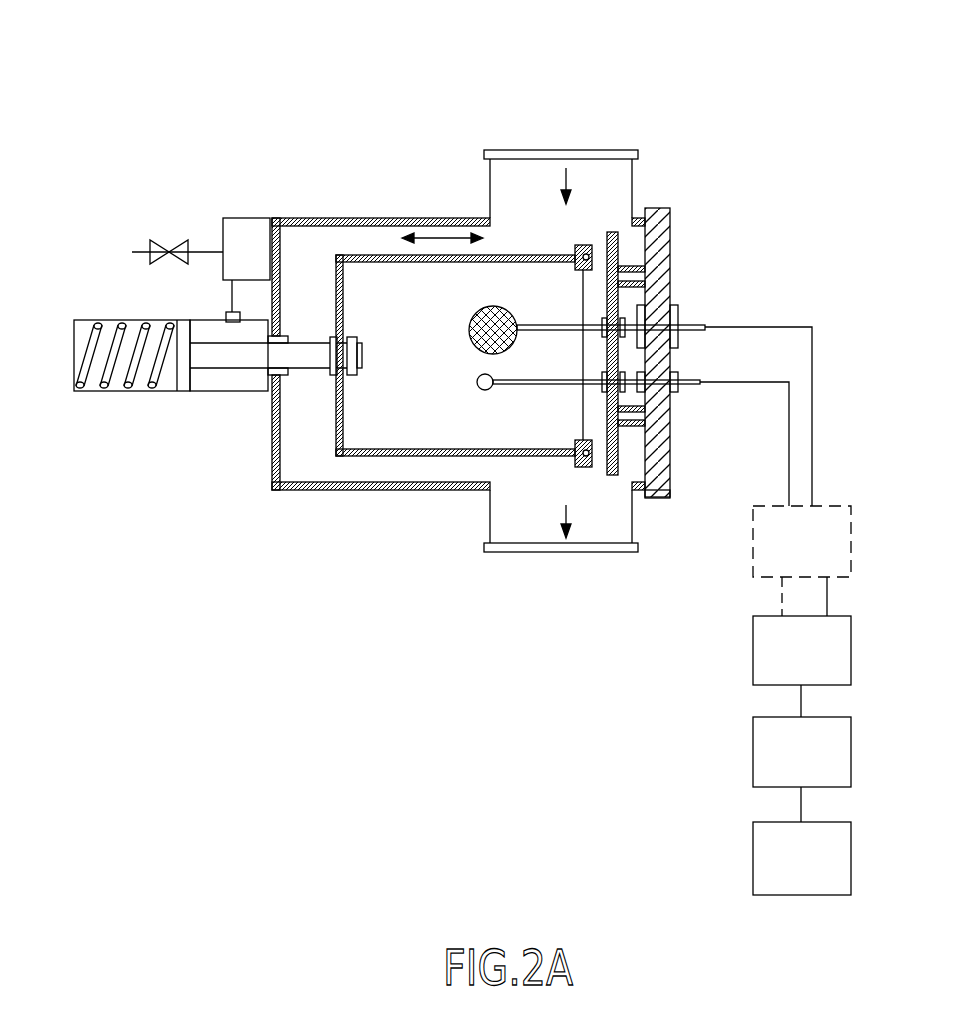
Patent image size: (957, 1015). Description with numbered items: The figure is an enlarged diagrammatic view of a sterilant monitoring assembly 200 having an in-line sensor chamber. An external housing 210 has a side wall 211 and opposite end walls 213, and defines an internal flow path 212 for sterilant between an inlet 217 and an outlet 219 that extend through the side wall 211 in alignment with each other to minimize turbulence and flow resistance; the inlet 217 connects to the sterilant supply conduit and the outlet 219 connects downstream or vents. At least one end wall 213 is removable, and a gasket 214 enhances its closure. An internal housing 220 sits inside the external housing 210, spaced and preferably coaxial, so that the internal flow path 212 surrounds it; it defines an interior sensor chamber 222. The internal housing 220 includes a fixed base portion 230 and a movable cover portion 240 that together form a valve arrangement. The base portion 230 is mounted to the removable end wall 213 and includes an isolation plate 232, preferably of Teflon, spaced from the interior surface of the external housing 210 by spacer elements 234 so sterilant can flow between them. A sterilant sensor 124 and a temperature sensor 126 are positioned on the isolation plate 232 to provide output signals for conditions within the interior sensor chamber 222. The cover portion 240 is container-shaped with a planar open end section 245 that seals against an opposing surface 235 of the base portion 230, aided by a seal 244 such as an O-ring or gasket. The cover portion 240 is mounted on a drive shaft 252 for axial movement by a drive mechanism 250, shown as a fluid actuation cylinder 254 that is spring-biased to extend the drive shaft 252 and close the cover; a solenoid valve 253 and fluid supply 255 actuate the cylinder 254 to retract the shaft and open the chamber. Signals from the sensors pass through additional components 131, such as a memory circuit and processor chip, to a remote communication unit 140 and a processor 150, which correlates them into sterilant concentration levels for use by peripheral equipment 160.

The sterilant monitoring assembly 200 is at (708, 78).
The external housing 210 is at (266, 496).
The side wall 211 is at (362, 216).
The internal flow path 212 is at (315, 242).
The end wall 213 is at (268, 452).
The gasket 214 is at (652, 500).
The inlet 217 is at (495, 196).
The outlet 219 is at (490, 546).
The internal housing 220 is at (418, 476).
The interior sensor chamber 222 is at (393, 287).
The cover portion 240 is at (348, 468).
The open end section 245 is at (590, 257).
The seal 244 is at (600, 455).
The opposing surface 235 is at (618, 250).
The base portion 230 is at (632, 295).
The spacer elements 234 is at (640, 268).
The isolation plate 232 is at (640, 436).
The sterilant sensor 124 is at (487, 306).
The temperature sensor 126 is at (484, 391).
The drive mechanism 250 is at (122, 297).
The drive shaft 252 is at (245, 358).
The solenoid valve 253 is at (236, 224).
The cylinder 254 is at (195, 388).
The fluid supply 255 is at (150, 240).
The additional components 131 is at (851, 540).
The remote communication unit 140 is at (851, 661).
The processor 150 is at (851, 758).
The peripheral equipment 160 is at (851, 862).